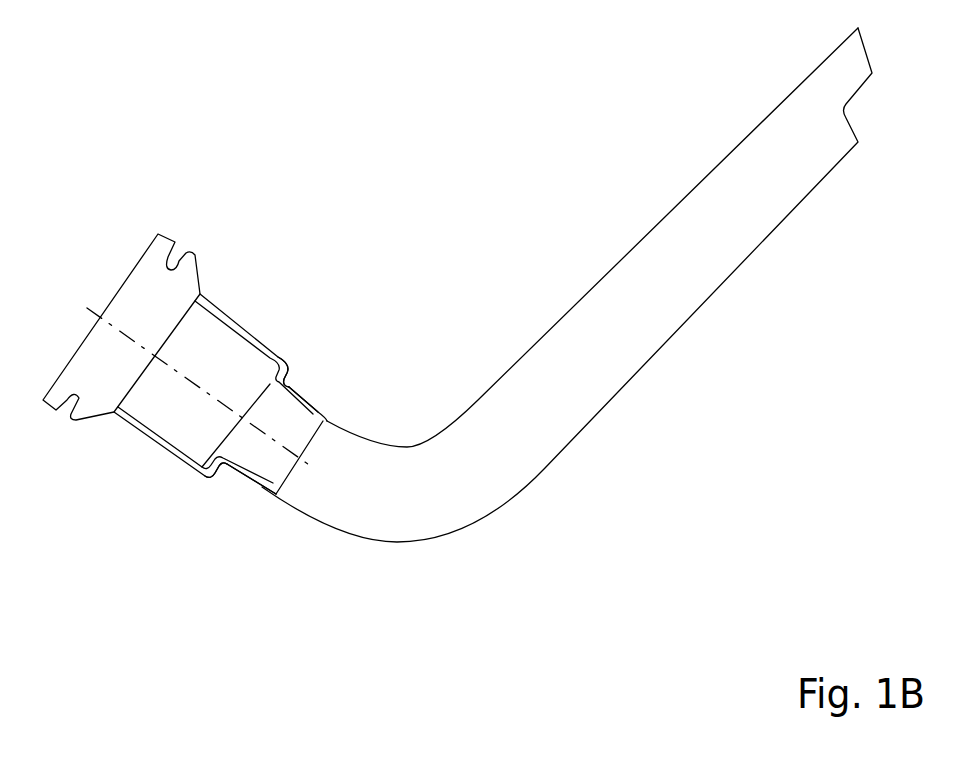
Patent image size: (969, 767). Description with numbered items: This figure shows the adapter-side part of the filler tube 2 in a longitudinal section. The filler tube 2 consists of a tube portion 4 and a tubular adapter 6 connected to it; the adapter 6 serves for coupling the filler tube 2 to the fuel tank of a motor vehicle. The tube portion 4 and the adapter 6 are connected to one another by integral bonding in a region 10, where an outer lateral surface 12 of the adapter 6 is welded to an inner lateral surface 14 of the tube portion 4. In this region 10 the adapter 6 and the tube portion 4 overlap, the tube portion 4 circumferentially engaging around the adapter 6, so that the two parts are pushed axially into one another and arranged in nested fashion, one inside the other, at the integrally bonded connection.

The filler tube 2 is at (457, 285).
The tube portion 4 is at (615, 378).
The tubular adapter 6 is at (215, 335).
The region of the integrally bonded connection 10 is at (357, 362).
The outer lateral surface 12 is at (290, 382).
The inner lateral surface 14 is at (330, 420).